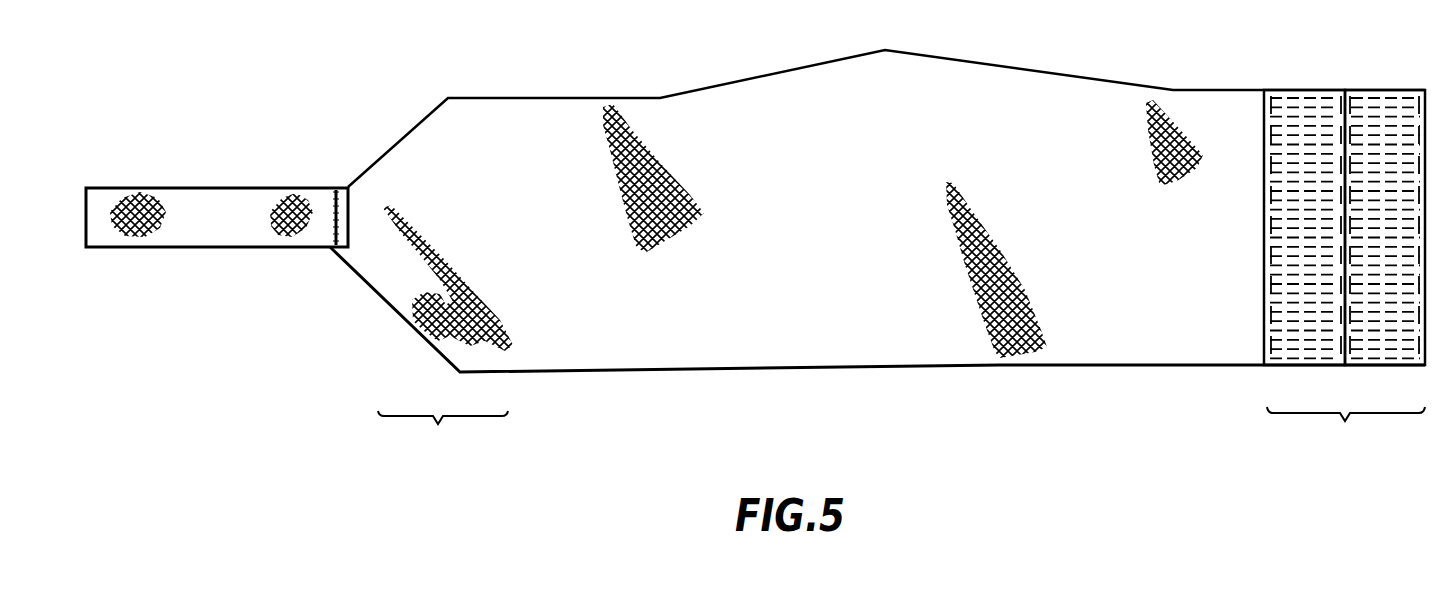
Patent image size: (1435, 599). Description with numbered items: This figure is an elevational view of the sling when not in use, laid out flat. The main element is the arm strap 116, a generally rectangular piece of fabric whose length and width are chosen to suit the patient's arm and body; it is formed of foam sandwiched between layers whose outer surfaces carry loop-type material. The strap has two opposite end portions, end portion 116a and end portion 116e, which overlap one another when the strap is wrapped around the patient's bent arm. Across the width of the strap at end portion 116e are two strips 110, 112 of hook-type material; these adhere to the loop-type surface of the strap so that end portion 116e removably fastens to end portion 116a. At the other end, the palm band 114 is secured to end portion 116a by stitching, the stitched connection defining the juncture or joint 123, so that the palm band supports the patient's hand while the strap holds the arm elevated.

The strip of hook-type material 110 is at (1307, 92).
The strip of hook-type material 112 is at (1392, 50).
The palm band 114 is at (221, 187).
The arm strap 116 is at (931, 54).
The end portion of arm strap 116a is at (443, 434).
The end portion of arm strap 116e is at (1346, 430).
The juncture or joint 123 is at (323, 187).